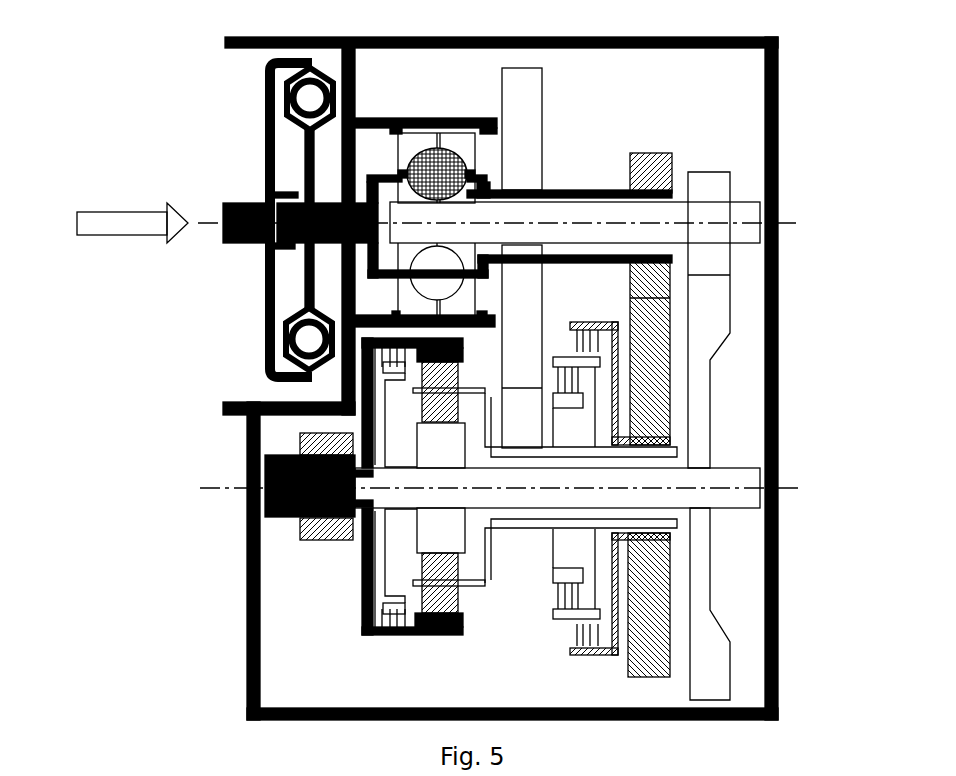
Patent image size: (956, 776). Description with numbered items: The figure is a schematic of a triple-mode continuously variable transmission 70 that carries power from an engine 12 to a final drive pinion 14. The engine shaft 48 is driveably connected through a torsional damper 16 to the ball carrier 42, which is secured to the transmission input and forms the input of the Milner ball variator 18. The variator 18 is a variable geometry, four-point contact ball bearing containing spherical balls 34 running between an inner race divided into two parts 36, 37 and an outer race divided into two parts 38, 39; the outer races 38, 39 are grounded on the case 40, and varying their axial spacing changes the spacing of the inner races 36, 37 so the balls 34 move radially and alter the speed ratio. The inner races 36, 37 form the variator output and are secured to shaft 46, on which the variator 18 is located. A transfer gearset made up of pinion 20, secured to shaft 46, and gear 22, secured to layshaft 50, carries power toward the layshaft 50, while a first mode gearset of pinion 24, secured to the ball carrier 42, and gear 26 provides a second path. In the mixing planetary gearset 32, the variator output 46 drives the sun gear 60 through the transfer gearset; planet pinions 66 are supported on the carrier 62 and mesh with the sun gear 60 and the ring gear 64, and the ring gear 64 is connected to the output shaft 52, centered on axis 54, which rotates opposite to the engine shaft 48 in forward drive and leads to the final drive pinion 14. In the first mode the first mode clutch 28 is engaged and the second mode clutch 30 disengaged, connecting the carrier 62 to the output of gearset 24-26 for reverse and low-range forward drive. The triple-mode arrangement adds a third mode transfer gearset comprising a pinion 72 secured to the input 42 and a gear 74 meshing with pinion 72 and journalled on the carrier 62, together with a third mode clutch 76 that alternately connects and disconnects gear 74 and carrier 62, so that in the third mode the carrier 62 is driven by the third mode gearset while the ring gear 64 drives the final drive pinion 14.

The engine 12 is at (142, 212).
The final drive pinion 14 is at (300, 530).
The torsional damper 16 is at (306, 133).
The Milner ball variator 18 is at (416, 96).
The pinion 20 is at (730, 185).
The gear 22 is at (703, 597).
The pinion 24 is at (675, 152).
The gear 26 is at (650, 675).
The first mode clutch 28 is at (576, 632).
The second mode clutch 30 is at (395, 612).
The mixing planetary gearset 32 is at (411, 657).
The spherical balls 34 is at (436, 168).
The inner race part 36 is at (368, 257).
The inner race part 37 is at (487, 265).
The outer race part 38 is at (412, 298).
The outer race part 39 is at (462, 300).
The case 40 is at (437, 47).
The ball carrier 42 is at (586, 190).
The shaft 46 is at (748, 222).
The engine shaft 48 is at (240, 248).
The layshaft 50 is at (742, 480).
The shaft 52 is at (248, 505).
The axis 54 is at (235, 485).
The sun gear 60 is at (430, 442).
The carrier 62 is at (478, 393).
The ring gear 64 is at (425, 508).
The planet pinions 66 is at (422, 420).
The triple-mode transmission 70 is at (254, 220).
The pinion 72 is at (532, 108).
The gear 74 is at (517, 572).
The third mode clutch 76 is at (572, 598).